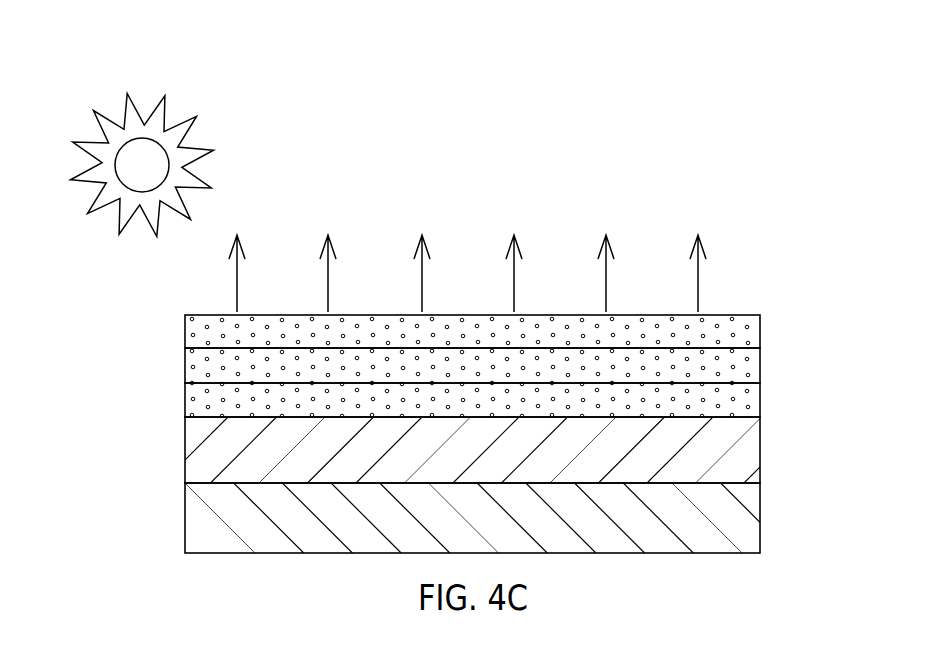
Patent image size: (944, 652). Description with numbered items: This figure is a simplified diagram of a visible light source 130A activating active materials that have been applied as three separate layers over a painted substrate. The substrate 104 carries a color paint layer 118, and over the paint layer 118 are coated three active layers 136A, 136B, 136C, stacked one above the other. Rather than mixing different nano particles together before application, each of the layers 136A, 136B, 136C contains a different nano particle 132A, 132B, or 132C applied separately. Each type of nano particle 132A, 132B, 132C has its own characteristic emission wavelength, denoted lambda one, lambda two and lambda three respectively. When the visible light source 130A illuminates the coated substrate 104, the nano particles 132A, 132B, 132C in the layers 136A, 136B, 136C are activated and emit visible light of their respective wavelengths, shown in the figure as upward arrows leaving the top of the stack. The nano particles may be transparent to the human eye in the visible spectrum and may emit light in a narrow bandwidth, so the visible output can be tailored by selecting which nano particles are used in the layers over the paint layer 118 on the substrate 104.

The visible light source 130A is at (196, 116).
The nano particle 132A is at (262, 320).
The nano particle 132B is at (438, 362).
The nano particle 132C is at (628, 390).
The layer 136A is at (760, 333).
The layer 136B is at (760, 364).
The layer 136C is at (760, 398).
The paint layer 118 is at (760, 448).
The substrate 104 is at (760, 513).